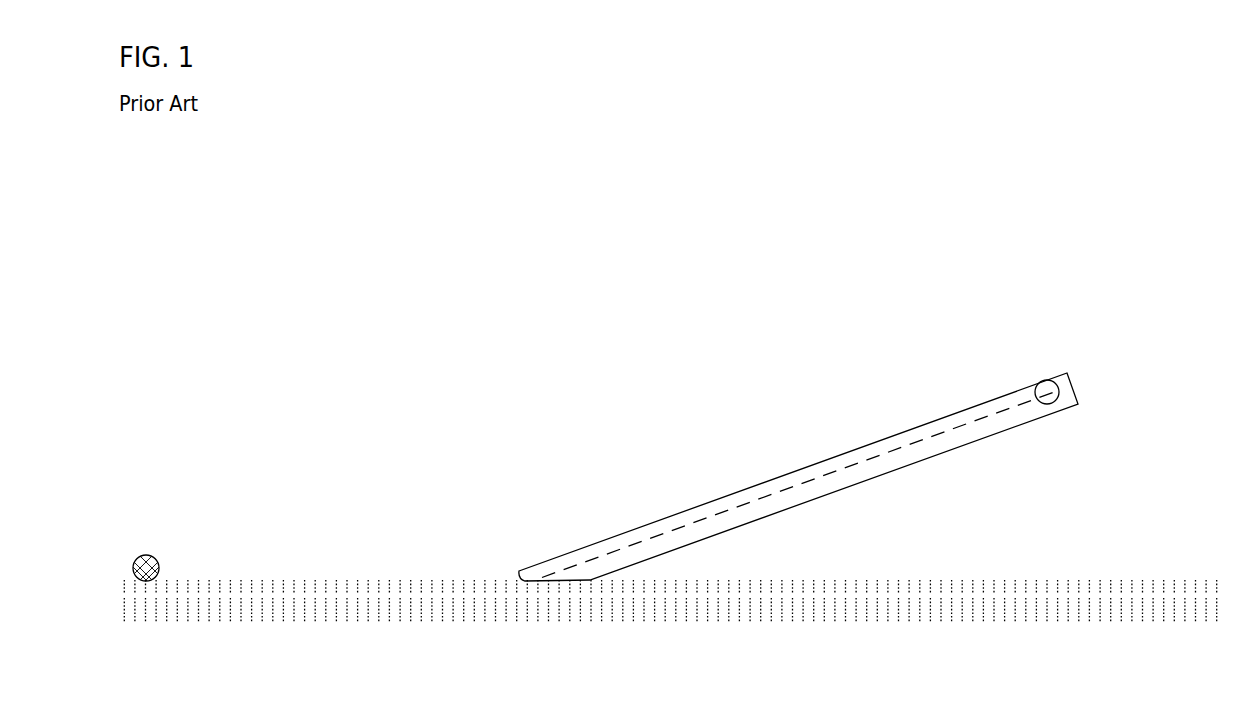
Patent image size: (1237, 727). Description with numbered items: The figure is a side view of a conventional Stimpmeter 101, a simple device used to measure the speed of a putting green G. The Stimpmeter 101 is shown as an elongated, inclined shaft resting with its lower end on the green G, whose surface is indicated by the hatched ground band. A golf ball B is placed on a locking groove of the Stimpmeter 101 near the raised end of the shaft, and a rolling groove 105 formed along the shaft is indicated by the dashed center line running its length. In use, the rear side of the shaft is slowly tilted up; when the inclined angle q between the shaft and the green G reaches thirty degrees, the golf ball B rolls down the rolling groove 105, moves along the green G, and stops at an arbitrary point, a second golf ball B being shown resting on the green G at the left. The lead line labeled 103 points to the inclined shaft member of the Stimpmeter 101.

The conventional Stimpmeter 101 is at (798, 423).
The inclined ramp member 103 is at (700, 506).
The rolling groove 105 is at (922, 426).
The golf ball B is at (147, 555).
The green G is at (337, 580).
The inclined angle q is at (686, 547).